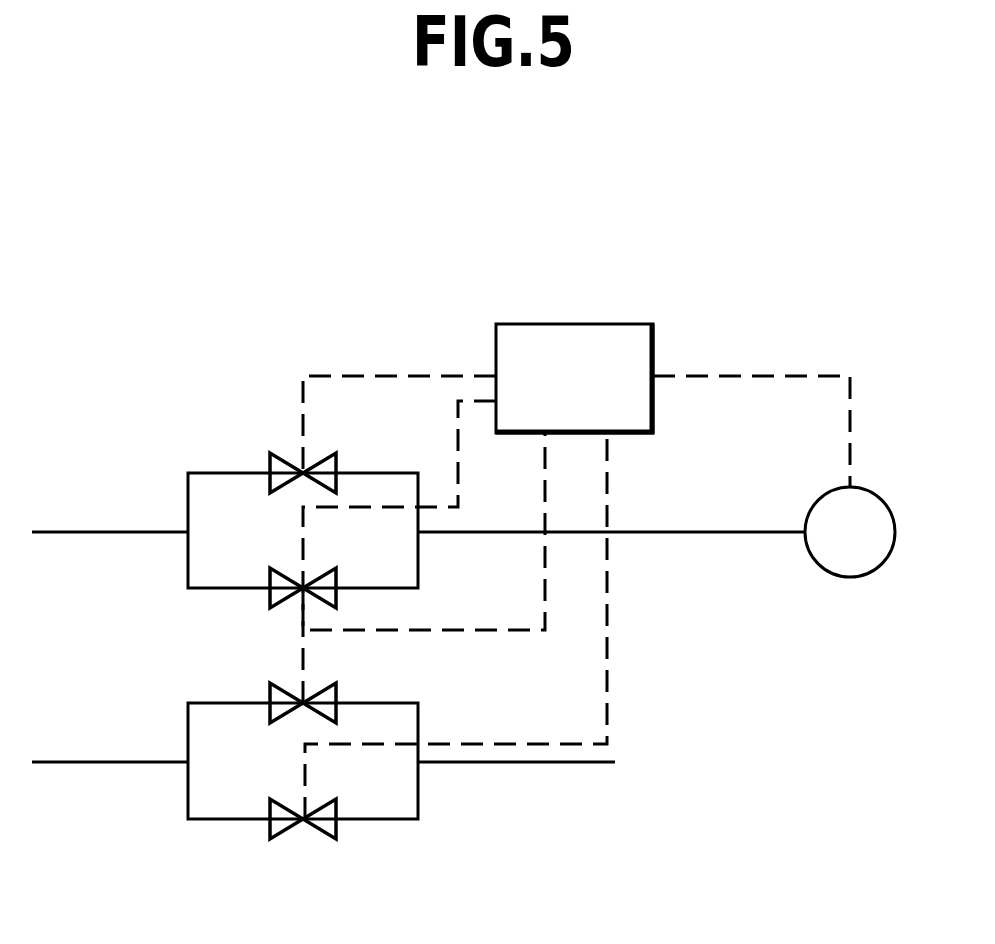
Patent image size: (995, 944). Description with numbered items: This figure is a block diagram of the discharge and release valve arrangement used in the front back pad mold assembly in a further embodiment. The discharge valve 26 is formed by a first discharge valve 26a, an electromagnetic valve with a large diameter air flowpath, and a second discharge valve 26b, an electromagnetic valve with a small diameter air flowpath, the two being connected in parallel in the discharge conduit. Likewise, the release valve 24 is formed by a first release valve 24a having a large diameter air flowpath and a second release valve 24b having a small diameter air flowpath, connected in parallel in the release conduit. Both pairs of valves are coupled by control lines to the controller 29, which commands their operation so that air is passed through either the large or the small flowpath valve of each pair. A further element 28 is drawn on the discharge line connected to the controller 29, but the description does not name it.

The release valve 24 is at (263, 825).
The first release valve 24a is at (371, 672).
The second release valve 24b is at (366, 787).
The discharge valve 26 is at (262, 452).
The first discharge valve 26a is at (337, 465).
The second discharge valve 26b is at (366, 561).
The sensor 28 is at (858, 577).
The controller 29 is at (606, 323).